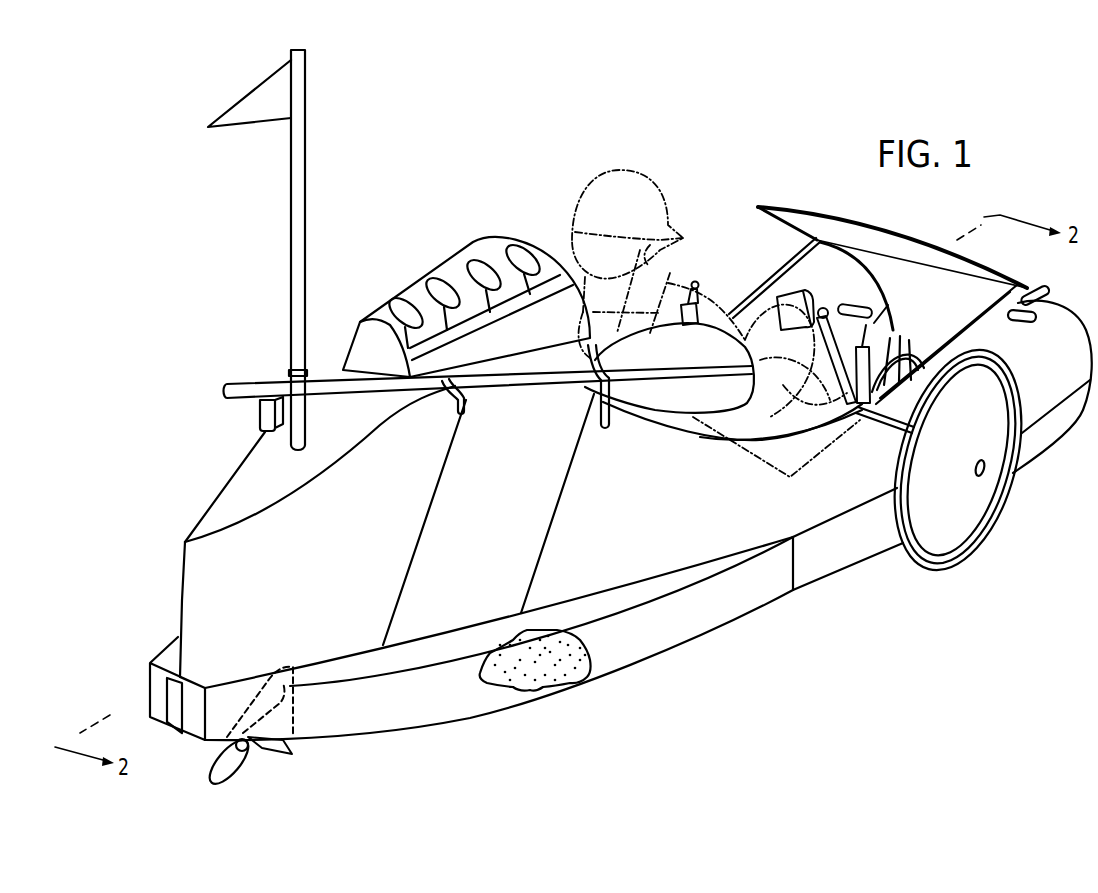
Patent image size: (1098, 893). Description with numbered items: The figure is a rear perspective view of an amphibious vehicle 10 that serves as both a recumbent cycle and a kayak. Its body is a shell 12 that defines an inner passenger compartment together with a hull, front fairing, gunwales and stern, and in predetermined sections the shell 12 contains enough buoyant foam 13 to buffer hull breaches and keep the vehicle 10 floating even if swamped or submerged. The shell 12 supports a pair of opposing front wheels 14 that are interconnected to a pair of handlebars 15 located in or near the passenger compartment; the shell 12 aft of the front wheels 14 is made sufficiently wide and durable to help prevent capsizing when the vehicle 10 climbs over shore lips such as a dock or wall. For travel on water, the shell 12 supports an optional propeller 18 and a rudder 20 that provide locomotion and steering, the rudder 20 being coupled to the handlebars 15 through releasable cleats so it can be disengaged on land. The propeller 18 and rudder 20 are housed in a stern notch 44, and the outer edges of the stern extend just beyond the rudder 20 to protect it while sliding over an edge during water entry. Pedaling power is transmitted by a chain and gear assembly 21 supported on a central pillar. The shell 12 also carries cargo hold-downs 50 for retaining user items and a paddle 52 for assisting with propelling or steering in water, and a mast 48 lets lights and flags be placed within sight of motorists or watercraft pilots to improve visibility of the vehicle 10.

The amphibious vehicle 10 is at (703, 112).
The shell 12 is at (231, 473).
The buoyant foam 13 is at (537, 690).
The front wheels 14 is at (962, 533).
The handlebars 15 is at (697, 270).
The propeller 18 is at (223, 773).
The rudder 20 is at (280, 753).
The chain and gear assembly 21 is at (799, 288).
The stern notch 44 is at (173, 718).
The mast 48 is at (288, 250).
The cargo hold-downs 50 is at (414, 273).
The paddle 52 is at (492, 380).